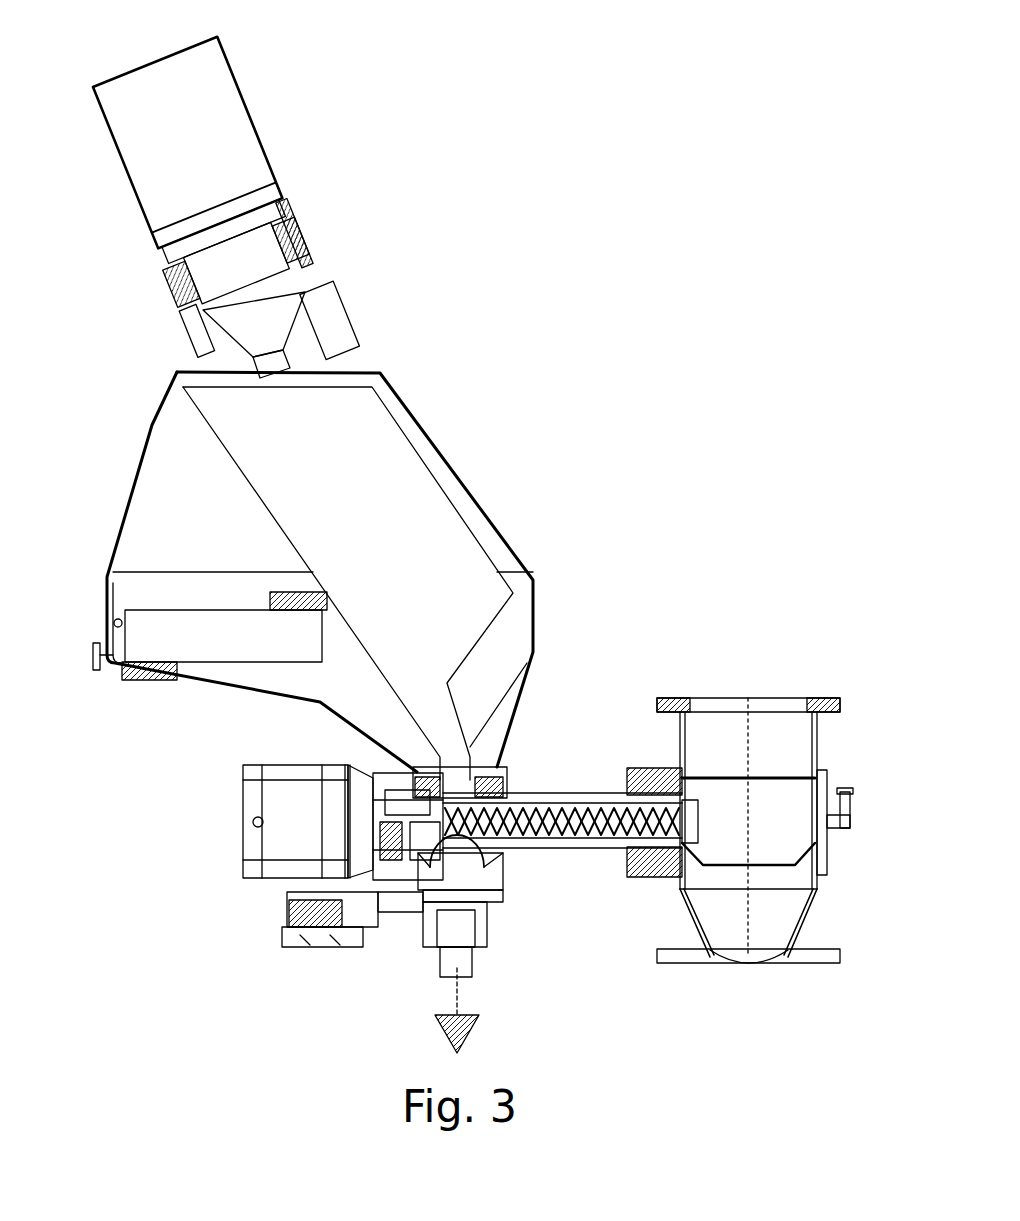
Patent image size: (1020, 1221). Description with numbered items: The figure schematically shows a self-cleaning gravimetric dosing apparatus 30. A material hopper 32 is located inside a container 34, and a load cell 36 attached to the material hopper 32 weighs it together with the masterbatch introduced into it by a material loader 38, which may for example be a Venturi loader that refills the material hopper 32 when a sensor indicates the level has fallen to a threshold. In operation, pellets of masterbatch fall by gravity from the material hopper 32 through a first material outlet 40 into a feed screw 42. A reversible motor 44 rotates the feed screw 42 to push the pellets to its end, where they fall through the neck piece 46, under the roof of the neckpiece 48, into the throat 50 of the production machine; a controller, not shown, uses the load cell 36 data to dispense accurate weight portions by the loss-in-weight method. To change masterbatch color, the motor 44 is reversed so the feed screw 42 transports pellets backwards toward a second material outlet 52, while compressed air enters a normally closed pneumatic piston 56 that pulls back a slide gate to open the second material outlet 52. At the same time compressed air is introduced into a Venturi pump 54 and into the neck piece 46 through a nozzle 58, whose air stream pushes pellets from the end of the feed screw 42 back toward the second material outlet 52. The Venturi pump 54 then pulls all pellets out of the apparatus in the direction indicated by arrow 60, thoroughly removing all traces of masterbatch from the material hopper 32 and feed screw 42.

The self-cleaning gravimetric dosing apparatus 30 is at (583, 258).
The material hopper 32 is at (400, 437).
The container 34 is at (497, 527).
The load cell 36 is at (142, 608).
The material loader 38 is at (262, 146).
The first material outlet 40 is at (503, 767).
The feed screw 42 is at (565, 795).
The reversible motor 44 is at (282, 837).
The neck piece 46 is at (728, 697).
The roof of the neckpiece 48 is at (790, 775).
The throat 50 is at (803, 923).
The second material outlet 52 is at (460, 860).
The Venturi pump 54 is at (488, 940).
The pneumatic piston 56 is at (287, 912).
The nozzle 58 is at (850, 817).
The arrow 60 is at (453, 998).